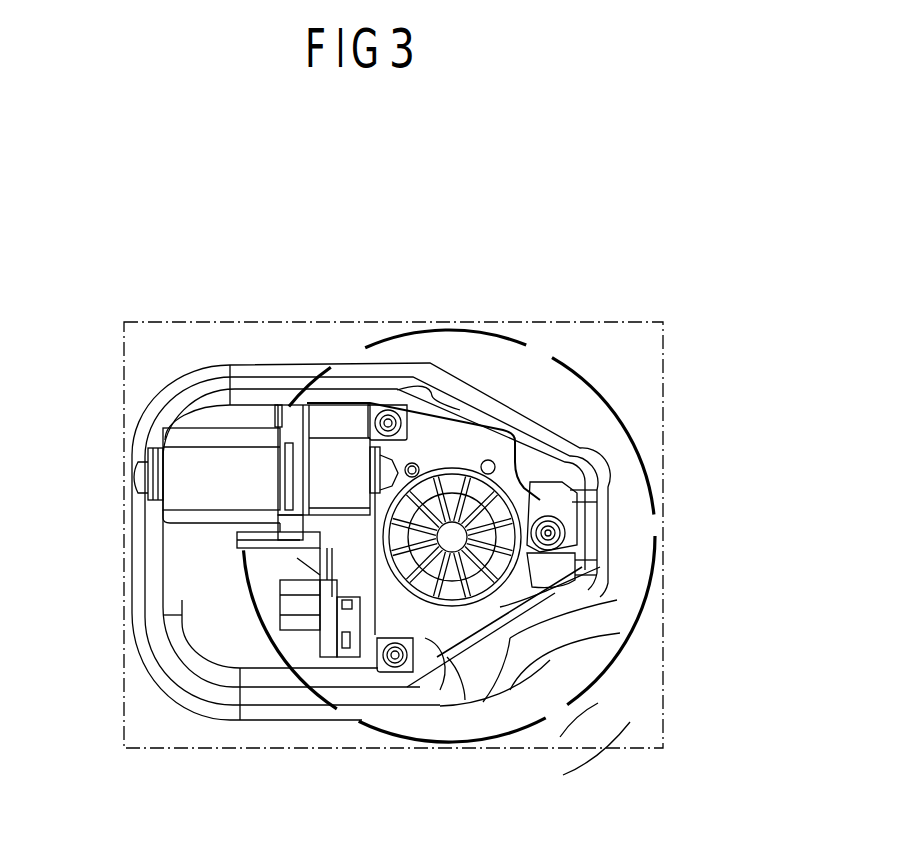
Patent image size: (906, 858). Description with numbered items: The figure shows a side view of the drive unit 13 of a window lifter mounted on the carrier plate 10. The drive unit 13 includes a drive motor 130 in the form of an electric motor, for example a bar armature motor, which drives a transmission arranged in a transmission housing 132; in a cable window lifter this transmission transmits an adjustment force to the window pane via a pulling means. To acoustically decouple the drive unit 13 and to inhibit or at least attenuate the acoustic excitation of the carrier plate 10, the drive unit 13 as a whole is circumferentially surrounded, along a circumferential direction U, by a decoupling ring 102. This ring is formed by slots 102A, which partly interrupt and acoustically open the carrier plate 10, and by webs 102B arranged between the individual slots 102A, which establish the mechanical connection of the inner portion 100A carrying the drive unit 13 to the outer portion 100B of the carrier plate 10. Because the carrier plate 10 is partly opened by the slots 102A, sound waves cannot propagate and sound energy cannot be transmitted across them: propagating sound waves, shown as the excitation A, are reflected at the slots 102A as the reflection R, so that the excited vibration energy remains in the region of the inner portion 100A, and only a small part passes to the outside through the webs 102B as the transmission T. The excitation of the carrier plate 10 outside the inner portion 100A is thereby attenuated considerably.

The carrier plate 10 is at (636, 372).
The decoupling ring 102 is at (630, 429).
The slots 102A is at (313, 405).
The webs 102B is at (338, 368).
The inner portion 100A is at (258, 558).
The outer portion 100B is at (200, 623).
The drive motor 130 is at (200, 465).
The drive unit 13 is at (299, 556).
The transmission housing 132 is at (425, 635).
The excitation A is at (569, 612).
The reflection R is at (562, 666).
The transmission T is at (585, 754).
The circumferential direction U is at (274, 688).